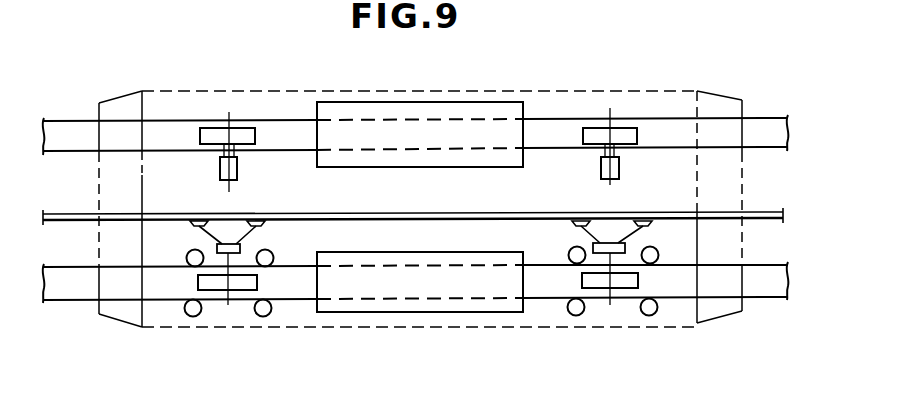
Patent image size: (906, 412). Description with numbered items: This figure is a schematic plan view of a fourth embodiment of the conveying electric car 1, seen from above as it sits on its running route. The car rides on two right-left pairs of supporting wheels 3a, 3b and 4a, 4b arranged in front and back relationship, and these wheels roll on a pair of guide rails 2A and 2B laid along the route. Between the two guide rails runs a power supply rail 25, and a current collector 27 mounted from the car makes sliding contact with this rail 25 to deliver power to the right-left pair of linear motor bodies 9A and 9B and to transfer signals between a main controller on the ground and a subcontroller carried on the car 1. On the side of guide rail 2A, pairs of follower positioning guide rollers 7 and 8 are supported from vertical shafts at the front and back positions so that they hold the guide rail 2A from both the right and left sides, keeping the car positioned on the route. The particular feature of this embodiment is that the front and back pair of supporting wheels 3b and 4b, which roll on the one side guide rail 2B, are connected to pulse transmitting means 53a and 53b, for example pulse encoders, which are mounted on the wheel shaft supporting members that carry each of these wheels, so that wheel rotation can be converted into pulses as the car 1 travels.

The conveying electric car 1 is at (462, 382).
The guide rail 2A is at (753, 283).
The guide rail 2B is at (762, 128).
The supporting wheel 3a is at (630, 283).
The supporting wheel 3b is at (622, 133).
The supporting wheel 4a is at (247, 285).
The supporting wheel 4b is at (242, 136).
The follower positioning guide rollers 7 is at (573, 257).
The follower positioning guide rollers 8 is at (190, 308).
The linear motor body 9A is at (422, 277).
The linear motor body 9B is at (399, 113).
The power supply rail 25 is at (430, 219).
The current collector 27 is at (188, 226).
The pulse transmitting means 53a is at (619, 164).
The pulse transmitting means 53b is at (219, 172).